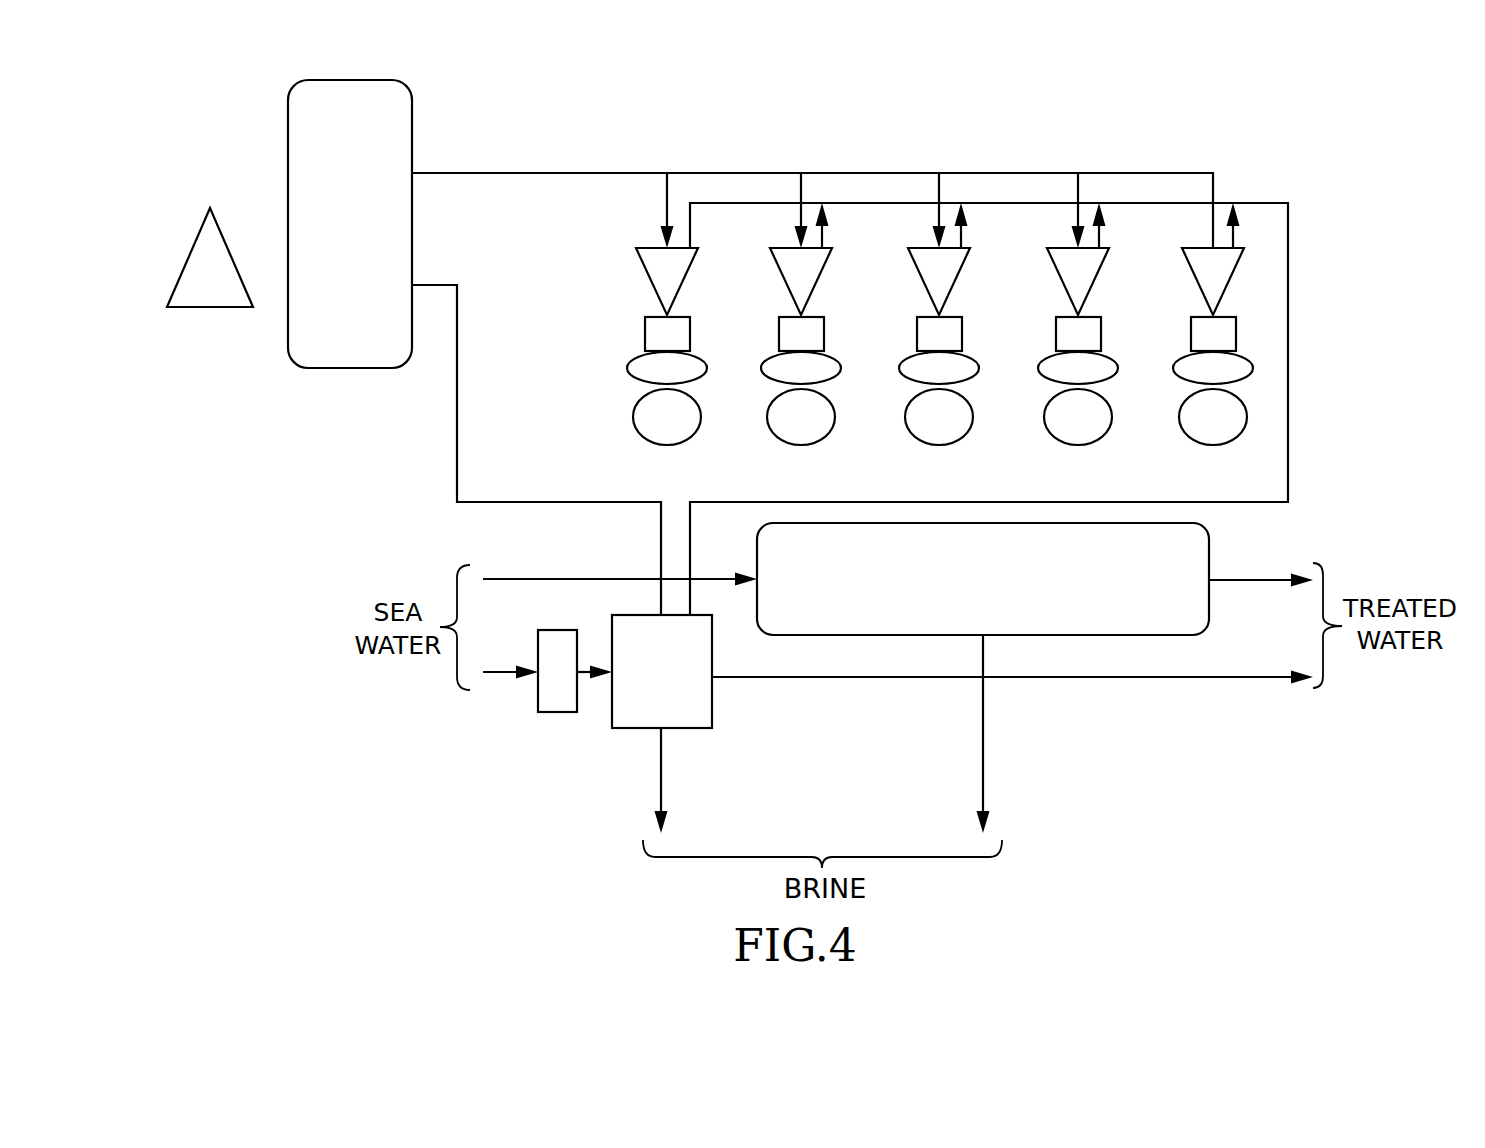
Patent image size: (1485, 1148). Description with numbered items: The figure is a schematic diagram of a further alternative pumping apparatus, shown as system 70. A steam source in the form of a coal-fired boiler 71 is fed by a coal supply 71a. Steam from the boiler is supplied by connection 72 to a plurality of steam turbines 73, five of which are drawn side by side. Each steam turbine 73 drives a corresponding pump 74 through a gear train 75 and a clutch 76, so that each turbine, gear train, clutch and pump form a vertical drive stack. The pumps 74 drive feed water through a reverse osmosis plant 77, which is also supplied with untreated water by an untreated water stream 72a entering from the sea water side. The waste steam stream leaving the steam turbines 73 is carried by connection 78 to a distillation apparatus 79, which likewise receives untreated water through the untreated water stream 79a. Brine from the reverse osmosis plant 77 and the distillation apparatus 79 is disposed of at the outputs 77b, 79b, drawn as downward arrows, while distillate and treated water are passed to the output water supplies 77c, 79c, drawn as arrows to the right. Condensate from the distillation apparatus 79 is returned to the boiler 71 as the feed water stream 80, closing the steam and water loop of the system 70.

The alternative system 70 is at (1258, 120).
The coal-fired boiler 71 is at (344, 90).
The coal supply 71a is at (198, 255).
The connection 72 is at (567, 172).
The sea water supply line 72a is at (584, 578).
The steam turbines 73 is at (661, 284).
The pump 74 is at (644, 405).
The gear train 75 is at (652, 331).
The clutch 76 is at (638, 364).
The reverse osmosis plant 77 is at (1200, 557).
The output 77b is at (983, 767).
The output water supply 77c is at (1238, 580).
The connection 78 is at (1288, 408).
The distillation apparatus 79 is at (635, 718).
The untreated water stream 79a is at (503, 668).
The output 79b is at (661, 767).
The output water supply 79c is at (1175, 677).
The feed water stream 80 is at (457, 405).